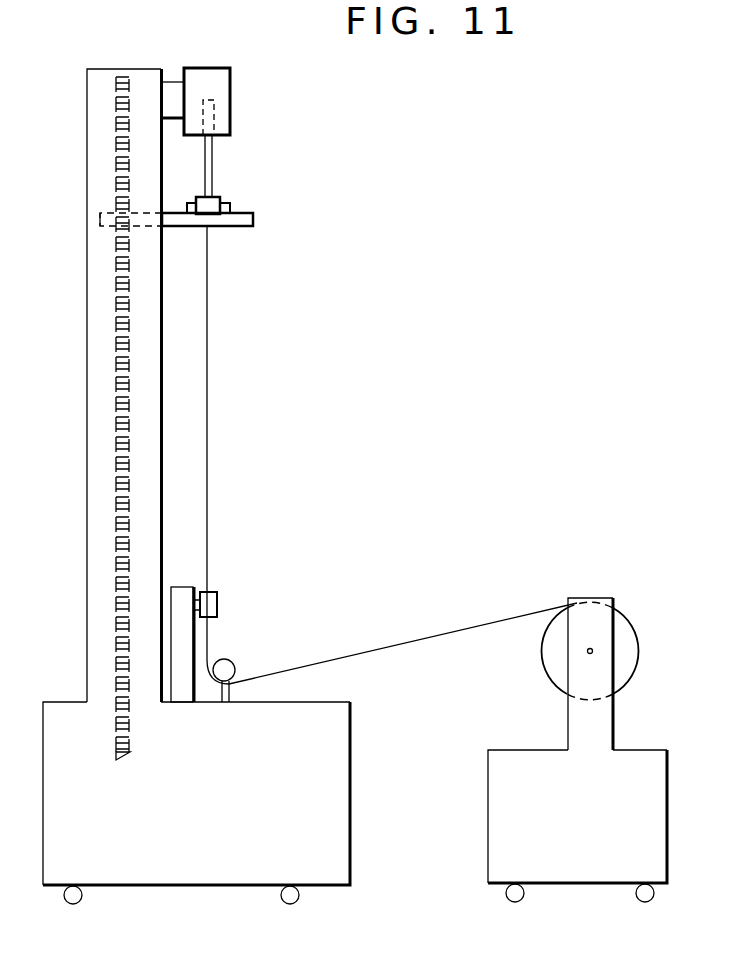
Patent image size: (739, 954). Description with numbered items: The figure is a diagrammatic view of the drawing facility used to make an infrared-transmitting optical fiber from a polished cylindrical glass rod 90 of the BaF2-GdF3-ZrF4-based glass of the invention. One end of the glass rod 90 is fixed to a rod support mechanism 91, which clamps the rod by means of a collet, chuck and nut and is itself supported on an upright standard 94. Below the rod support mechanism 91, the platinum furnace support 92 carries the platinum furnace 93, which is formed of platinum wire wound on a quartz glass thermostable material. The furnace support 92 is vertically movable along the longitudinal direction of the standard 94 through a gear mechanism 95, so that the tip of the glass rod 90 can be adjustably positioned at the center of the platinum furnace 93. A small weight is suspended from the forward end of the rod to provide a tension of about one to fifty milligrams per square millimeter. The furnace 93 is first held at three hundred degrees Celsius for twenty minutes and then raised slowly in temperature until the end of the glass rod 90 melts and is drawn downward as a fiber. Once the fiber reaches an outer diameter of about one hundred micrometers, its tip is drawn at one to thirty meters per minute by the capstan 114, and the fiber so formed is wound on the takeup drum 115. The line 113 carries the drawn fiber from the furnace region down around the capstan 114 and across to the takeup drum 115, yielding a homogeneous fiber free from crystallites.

The glass rod 90 is at (212, 162).
The rod support mechanism 91 is at (223, 87).
The platinum furnace support 92 is at (253, 222).
The platinum furnace 93 is at (220, 200).
The standard 94 is at (87, 298).
The gear mechanism 95 is at (113, 350).
The cable 113 is at (207, 330).
The capstan 114 is at (217, 605).
The takeup drum 115 is at (623, 637).